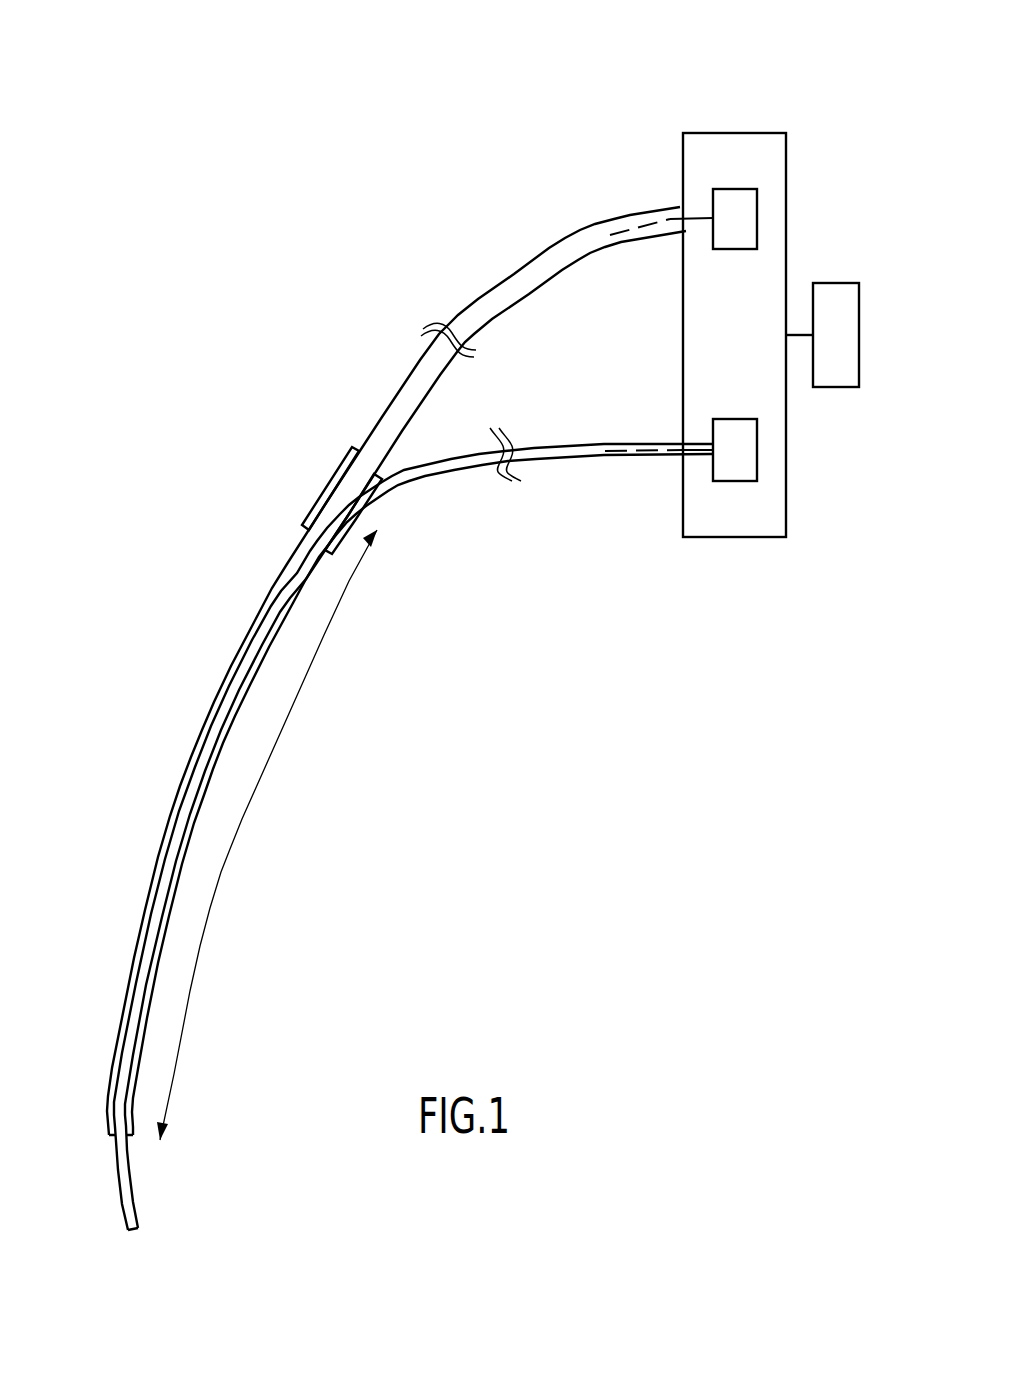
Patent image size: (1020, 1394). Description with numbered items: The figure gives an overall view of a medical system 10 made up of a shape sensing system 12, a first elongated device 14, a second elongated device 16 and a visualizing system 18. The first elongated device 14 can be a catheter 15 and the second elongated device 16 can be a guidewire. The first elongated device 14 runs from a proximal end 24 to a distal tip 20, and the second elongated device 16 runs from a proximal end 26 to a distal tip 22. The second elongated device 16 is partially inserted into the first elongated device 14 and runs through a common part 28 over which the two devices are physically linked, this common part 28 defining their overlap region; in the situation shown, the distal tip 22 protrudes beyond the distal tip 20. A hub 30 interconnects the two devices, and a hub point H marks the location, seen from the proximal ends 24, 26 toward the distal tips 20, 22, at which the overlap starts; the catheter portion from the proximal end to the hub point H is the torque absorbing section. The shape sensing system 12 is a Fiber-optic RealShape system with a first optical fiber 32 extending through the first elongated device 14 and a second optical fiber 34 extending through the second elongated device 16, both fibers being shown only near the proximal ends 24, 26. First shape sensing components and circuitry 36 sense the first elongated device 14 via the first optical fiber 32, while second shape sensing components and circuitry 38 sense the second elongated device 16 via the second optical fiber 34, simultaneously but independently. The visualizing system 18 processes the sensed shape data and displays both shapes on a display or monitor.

The system 10 is at (824, 86).
The shape sensing system 12 is at (759, 118).
The first elongated device 14 is at (364, 649).
The catheter 15 is at (396, 398).
The second elongated device 16 is at (413, 829).
The visualizing system 18 is at (855, 405).
The distal tip 20 is at (108, 1125).
The distal tip 22 is at (135, 1213).
The proximal end 24 is at (665, 207).
The proximal end 26 is at (663, 457).
The common part 28 is at (237, 830).
The hub 30 is at (325, 495).
The first optical fiber 32 is at (626, 229).
The second optical fiber 34 is at (618, 455).
The first shape sensing components and circuitry 36 is at (750, 217).
The second shape sensing components and circuitry 38 is at (750, 448).
The hub point H is at (386, 521).